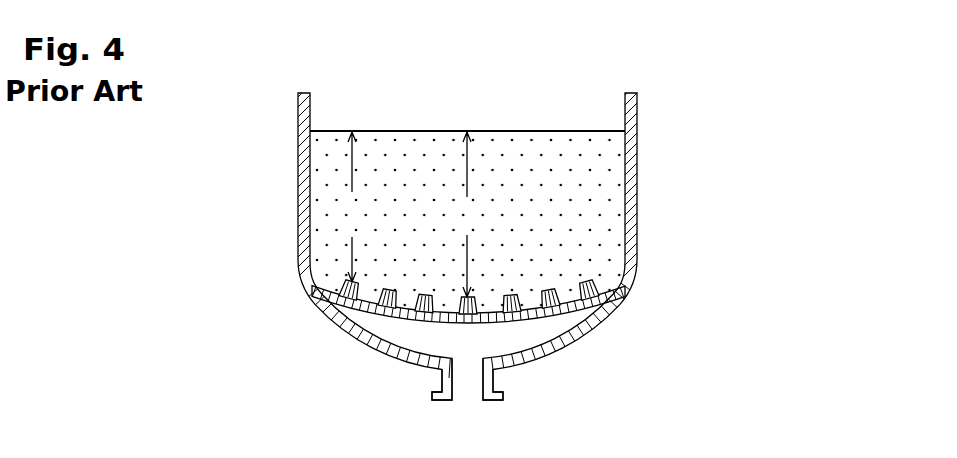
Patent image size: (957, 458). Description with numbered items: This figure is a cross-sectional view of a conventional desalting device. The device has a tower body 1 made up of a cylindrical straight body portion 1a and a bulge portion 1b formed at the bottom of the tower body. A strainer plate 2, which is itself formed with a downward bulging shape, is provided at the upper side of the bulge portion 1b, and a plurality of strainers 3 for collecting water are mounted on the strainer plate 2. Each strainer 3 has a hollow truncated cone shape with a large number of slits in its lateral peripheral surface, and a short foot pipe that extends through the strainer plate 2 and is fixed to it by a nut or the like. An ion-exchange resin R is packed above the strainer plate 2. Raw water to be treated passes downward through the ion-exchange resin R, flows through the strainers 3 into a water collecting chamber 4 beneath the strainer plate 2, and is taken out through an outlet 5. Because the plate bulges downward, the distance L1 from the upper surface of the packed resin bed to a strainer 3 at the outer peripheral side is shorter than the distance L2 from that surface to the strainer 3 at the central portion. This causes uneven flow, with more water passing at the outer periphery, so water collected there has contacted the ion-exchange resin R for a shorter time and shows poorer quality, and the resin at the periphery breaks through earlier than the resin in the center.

The tower body 1 is at (282, 136).
The cylindrical straight body portion 1a is at (298, 192).
The bulge portion 1b is at (534, 362).
The strainer plate 2 is at (442, 327).
The strainers 3 is at (390, 289).
The water collecting chamber 4 is at (562, 334).
The outlet 5 is at (468, 396).
The ion-exchange resin R is at (540, 153).
The distance L1 is at (353, 207).
The distance L2 is at (468, 214).